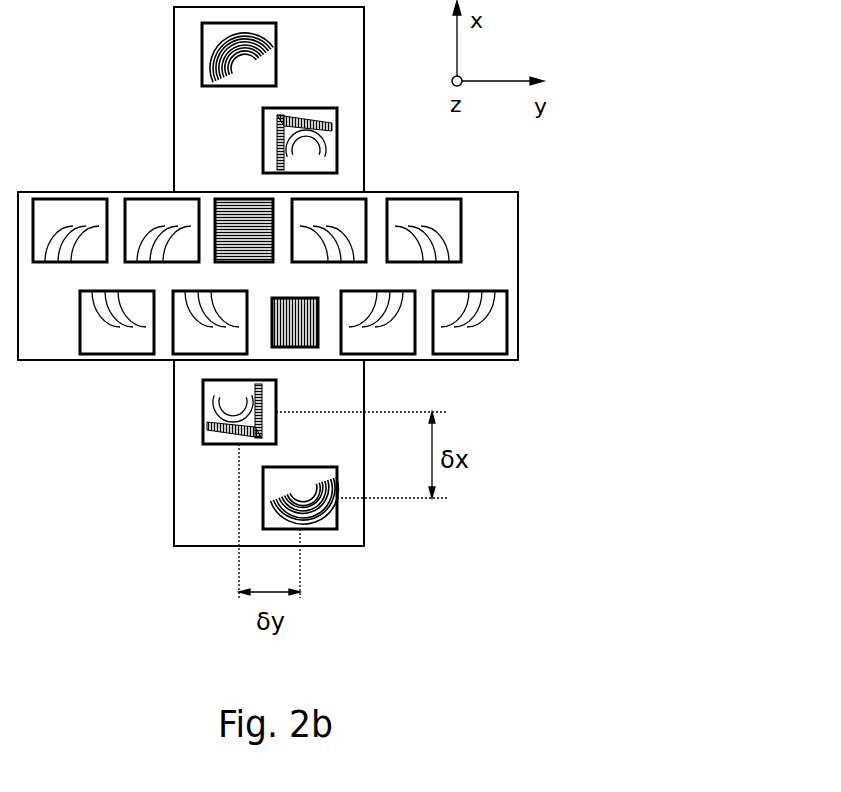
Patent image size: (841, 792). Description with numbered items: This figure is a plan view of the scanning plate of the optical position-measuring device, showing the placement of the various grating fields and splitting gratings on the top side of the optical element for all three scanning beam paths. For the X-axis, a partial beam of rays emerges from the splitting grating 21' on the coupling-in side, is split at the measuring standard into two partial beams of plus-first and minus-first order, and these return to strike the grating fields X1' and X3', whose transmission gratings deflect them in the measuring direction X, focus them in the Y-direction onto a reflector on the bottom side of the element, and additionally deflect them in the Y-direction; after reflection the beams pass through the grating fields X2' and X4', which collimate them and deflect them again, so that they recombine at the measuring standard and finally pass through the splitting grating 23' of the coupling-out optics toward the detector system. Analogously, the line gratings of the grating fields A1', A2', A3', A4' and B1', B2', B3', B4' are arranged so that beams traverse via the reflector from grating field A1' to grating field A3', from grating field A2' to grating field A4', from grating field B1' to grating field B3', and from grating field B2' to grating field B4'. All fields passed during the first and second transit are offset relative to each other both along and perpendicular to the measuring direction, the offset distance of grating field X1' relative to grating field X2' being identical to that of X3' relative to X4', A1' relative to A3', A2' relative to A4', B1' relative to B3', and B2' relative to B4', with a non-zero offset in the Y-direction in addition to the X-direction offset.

The grating field X1' is at (339, 508).
The grating field X2' is at (197, 419).
The grating field X3' is at (340, 138).
The grating field X4' is at (199, 52).
The splitting grating 21' is at (357, 351).
The splitting grating 23' is at (193, 203).
The grating field A1' is at (210, 323).
The grating field A2' is at (470, 323).
The grating field A3' is at (162, 230).
The grating field A4' is at (424, 230).
The grating field B1' is at (117, 323).
The grating field B2' is at (378, 323).
The grating field B3' is at (70, 230).
The grating field B4' is at (329, 230).